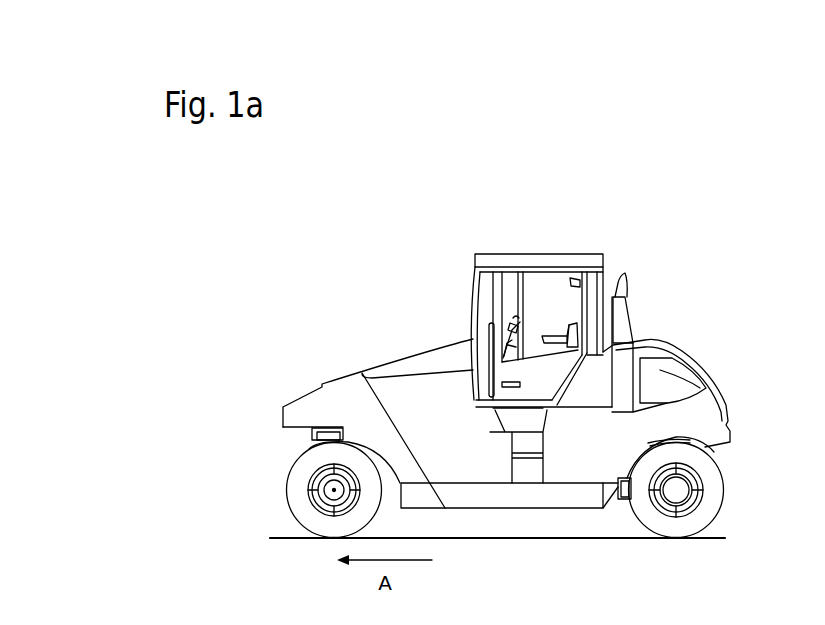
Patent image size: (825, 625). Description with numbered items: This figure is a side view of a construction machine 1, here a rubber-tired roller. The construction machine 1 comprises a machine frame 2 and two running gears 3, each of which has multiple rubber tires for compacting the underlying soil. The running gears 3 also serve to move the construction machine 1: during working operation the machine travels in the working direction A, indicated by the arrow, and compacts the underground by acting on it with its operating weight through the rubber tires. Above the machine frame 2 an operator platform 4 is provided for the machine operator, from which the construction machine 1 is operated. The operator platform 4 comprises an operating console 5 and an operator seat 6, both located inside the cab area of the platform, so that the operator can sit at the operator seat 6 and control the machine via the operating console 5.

The construction machine 1 is at (435, 260).
The machine frame 2 is at (348, 393).
The running gears 3 is at (333, 452).
The operator platform 4 is at (619, 260).
The operating console 5 is at (507, 343).
The operator seat 6 is at (566, 323).